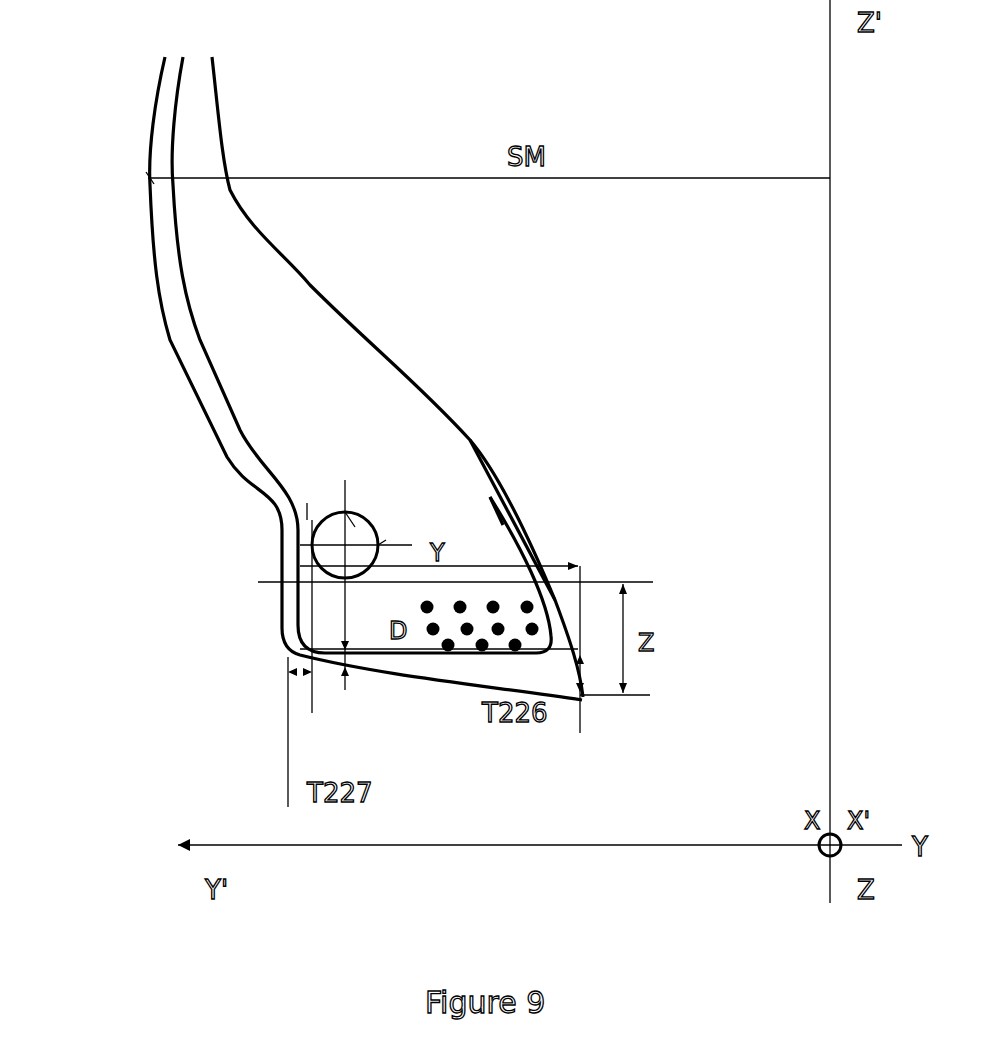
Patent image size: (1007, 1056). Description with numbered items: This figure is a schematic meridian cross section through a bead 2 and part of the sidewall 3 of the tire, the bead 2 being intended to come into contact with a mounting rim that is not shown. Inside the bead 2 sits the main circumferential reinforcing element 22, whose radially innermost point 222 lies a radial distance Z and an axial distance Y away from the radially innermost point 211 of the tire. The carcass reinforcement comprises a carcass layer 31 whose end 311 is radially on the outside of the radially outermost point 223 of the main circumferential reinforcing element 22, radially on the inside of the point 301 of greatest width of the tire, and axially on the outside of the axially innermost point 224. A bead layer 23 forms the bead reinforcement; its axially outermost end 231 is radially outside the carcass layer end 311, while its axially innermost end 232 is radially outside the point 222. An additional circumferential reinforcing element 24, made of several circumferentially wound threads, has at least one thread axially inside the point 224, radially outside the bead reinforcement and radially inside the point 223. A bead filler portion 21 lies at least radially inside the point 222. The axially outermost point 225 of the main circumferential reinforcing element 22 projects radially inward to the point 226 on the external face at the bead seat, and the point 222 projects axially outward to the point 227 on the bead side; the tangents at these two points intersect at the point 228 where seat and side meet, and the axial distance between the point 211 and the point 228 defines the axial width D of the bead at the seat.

The bead 2 is at (423, 382).
The sidewall 3 is at (165, 65).
The carcass layer 31 is at (173, 147).
The point of greatest width of the tire 301 is at (160, 176).
The end of the carcass layer 311 is at (307, 503).
The bead filler portion 21 is at (477, 542).
The radially innermost point of the tire 211 is at (583, 703).
The main circumferential reinforcing element 22 is at (381, 537).
The radially innermost point of the main circumferential reinforcing element 222 is at (287, 647).
The radially outermost point of the main circumferential reinforcing element 223 is at (356, 527).
The axially innermost point of the main circumferential reinforcing element 224 is at (386, 540).
The axially outermost point of the main circumferential reinforcing element 225 is at (280, 505).
The interior radial projection 226 is at (314, 666).
The external axial projection 227 is at (275, 576).
The point at which the seat and the side of the bead meet 228 is at (282, 656).
The bead layer 23 is at (258, 467).
The axially outermost end of the bead layer 231 is at (260, 462).
The axially innermost end of the bead layer 232 is at (487, 537).
The additional circumferential reinforcing element 24 is at (487, 650).